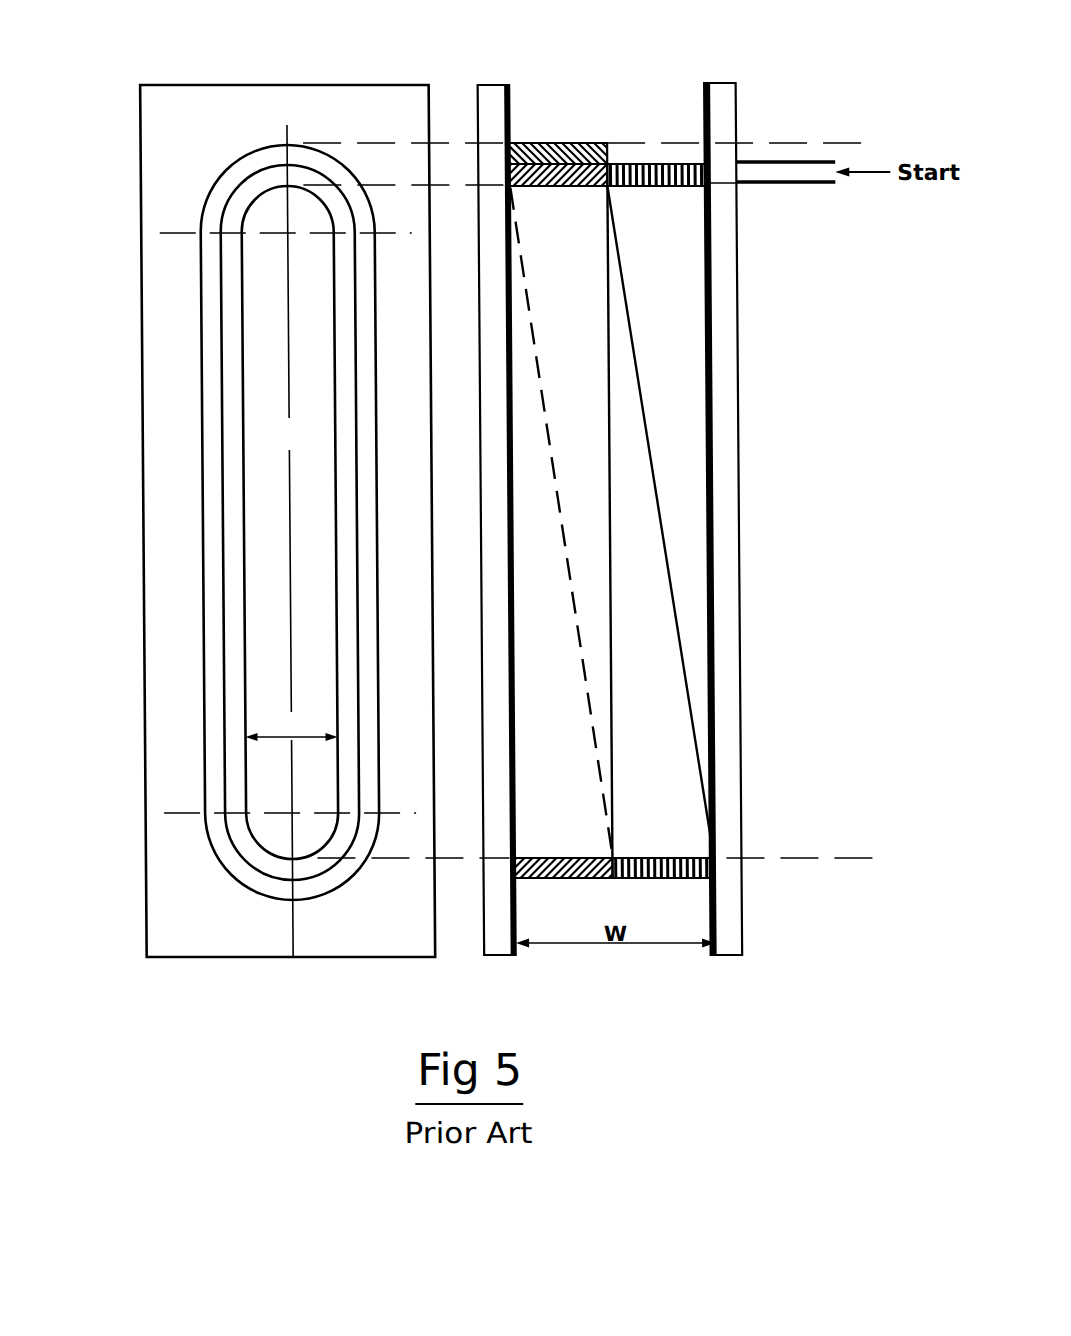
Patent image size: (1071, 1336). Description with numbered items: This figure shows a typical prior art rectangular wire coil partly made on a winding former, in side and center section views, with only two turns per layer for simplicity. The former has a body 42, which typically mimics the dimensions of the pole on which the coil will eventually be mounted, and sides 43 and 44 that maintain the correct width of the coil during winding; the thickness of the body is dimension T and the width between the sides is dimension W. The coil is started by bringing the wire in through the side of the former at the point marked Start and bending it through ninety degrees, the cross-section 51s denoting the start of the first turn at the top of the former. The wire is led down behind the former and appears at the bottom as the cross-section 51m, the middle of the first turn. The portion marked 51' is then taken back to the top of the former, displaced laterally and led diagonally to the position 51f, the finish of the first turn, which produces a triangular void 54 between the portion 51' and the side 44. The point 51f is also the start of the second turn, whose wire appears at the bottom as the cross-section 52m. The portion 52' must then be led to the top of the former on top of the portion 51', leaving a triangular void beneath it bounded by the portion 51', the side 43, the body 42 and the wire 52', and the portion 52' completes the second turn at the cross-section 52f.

The former body 42 is at (265, 431).
The former side 43 is at (157, 161).
The former side 44 is at (724, 101).
The finish of the first turn 51f is at (604, 141).
The start of the first turn 51s is at (679, 184).
The middle of the first turn 51m is at (684, 878).
The first-turn wire portion 51' is at (726, 522).
The finish of the second turn 52f is at (562, 141).
The middle of the second turn 52m is at (585, 878).
The second-turn wire portion 52' is at (523, 604).
The triangular void 54 is at (678, 335).